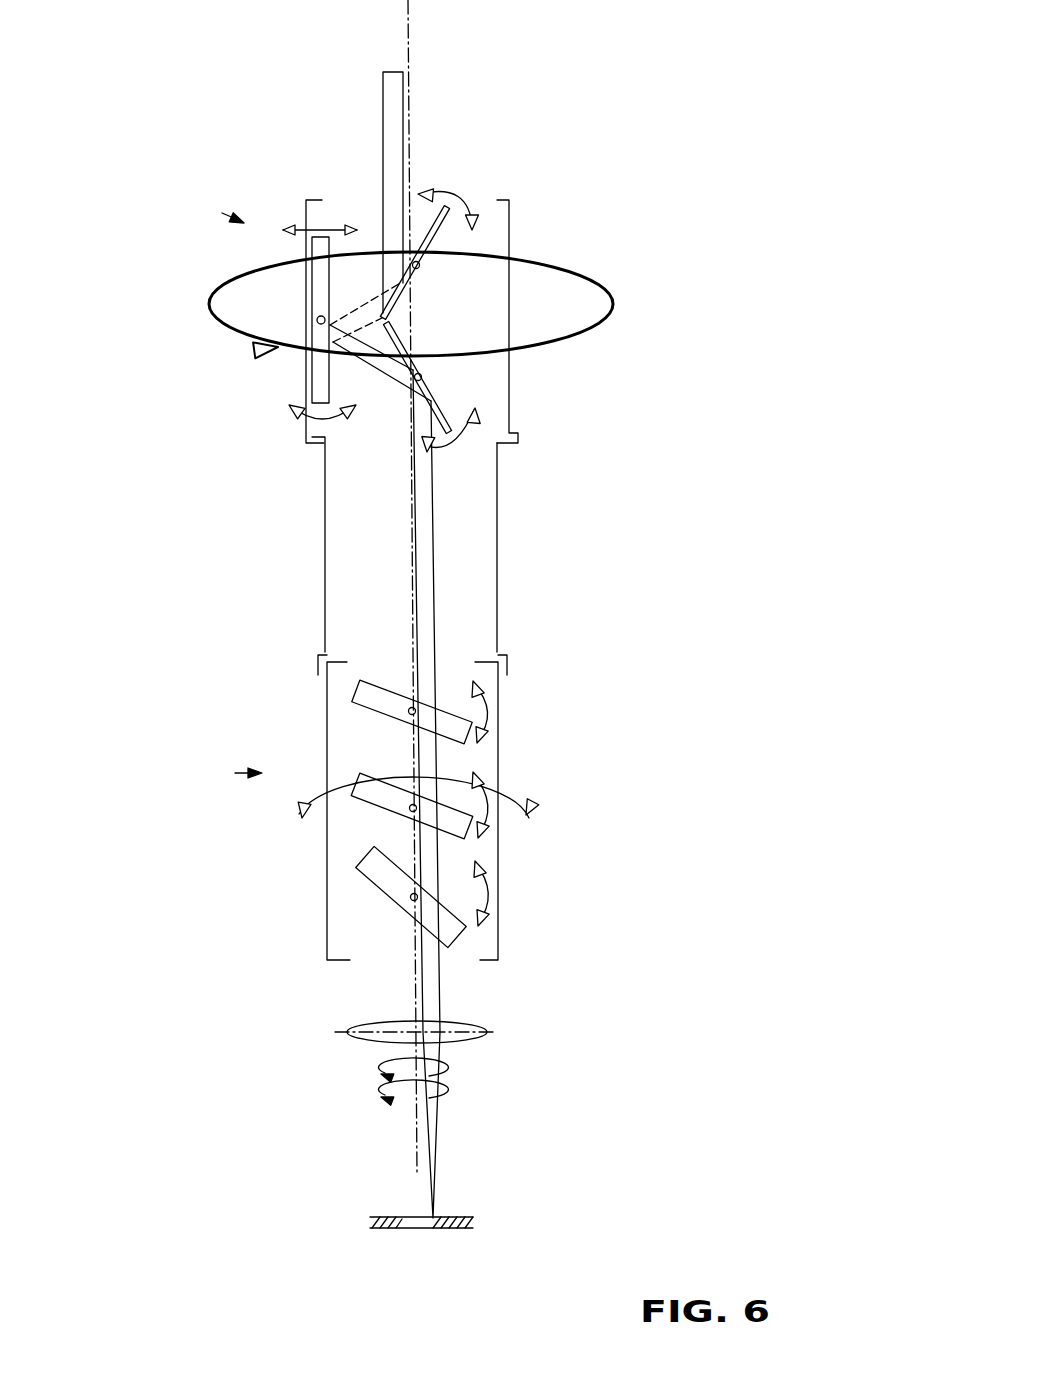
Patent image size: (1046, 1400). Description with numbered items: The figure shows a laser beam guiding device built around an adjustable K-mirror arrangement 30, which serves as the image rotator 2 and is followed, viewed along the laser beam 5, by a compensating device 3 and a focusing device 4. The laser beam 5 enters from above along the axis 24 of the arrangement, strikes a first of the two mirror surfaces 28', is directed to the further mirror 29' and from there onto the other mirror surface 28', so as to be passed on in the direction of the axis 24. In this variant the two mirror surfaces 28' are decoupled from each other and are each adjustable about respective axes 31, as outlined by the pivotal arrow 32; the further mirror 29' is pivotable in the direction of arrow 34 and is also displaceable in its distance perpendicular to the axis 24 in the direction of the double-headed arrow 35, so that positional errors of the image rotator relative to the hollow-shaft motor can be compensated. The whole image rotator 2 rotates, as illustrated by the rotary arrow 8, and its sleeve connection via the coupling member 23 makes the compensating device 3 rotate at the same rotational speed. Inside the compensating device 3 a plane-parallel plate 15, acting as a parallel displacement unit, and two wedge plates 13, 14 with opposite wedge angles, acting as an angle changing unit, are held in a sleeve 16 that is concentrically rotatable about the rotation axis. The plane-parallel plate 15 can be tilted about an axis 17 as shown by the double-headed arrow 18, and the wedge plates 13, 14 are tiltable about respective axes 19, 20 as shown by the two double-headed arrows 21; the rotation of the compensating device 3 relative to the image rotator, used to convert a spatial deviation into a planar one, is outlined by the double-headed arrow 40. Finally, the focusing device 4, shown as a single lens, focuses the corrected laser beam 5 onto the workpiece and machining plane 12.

The image rotator 2 is at (225, 210).
The compensating device 3 is at (363, 723).
The focusing device 4 is at (488, 1032).
The laser beam 5 is at (393, 114).
The rotary arrow 8 is at (255, 272).
The machining plane 12 is at (463, 1217).
The wedge plate 13 is at (383, 797).
The wedge plate 14 is at (382, 873).
The plane-parallel plate 15 is at (362, 693).
The sleeve 16 is at (502, 933).
The axis 17 is at (408, 711).
The double-headed arrow 18 is at (492, 711).
The axis 19 is at (409, 809).
The axis 20 is at (410, 898).
The double-headed arrows 21 is at (490, 820).
The coupling member 23 is at (326, 554).
The axis 24 is at (410, 32).
The mirror surfaces 28' is at (453, 287).
The further mirror 29' is at (274, 321).
The K-mirror arrangement 30 is at (495, 242).
The axes 31 is at (427, 253).
The pivotal arrow 32 is at (457, 200).
The arrow 34 is at (307, 415).
The double-headed arrow 35 is at (398, 248).
The double-headed arrow 40 is at (510, 768).